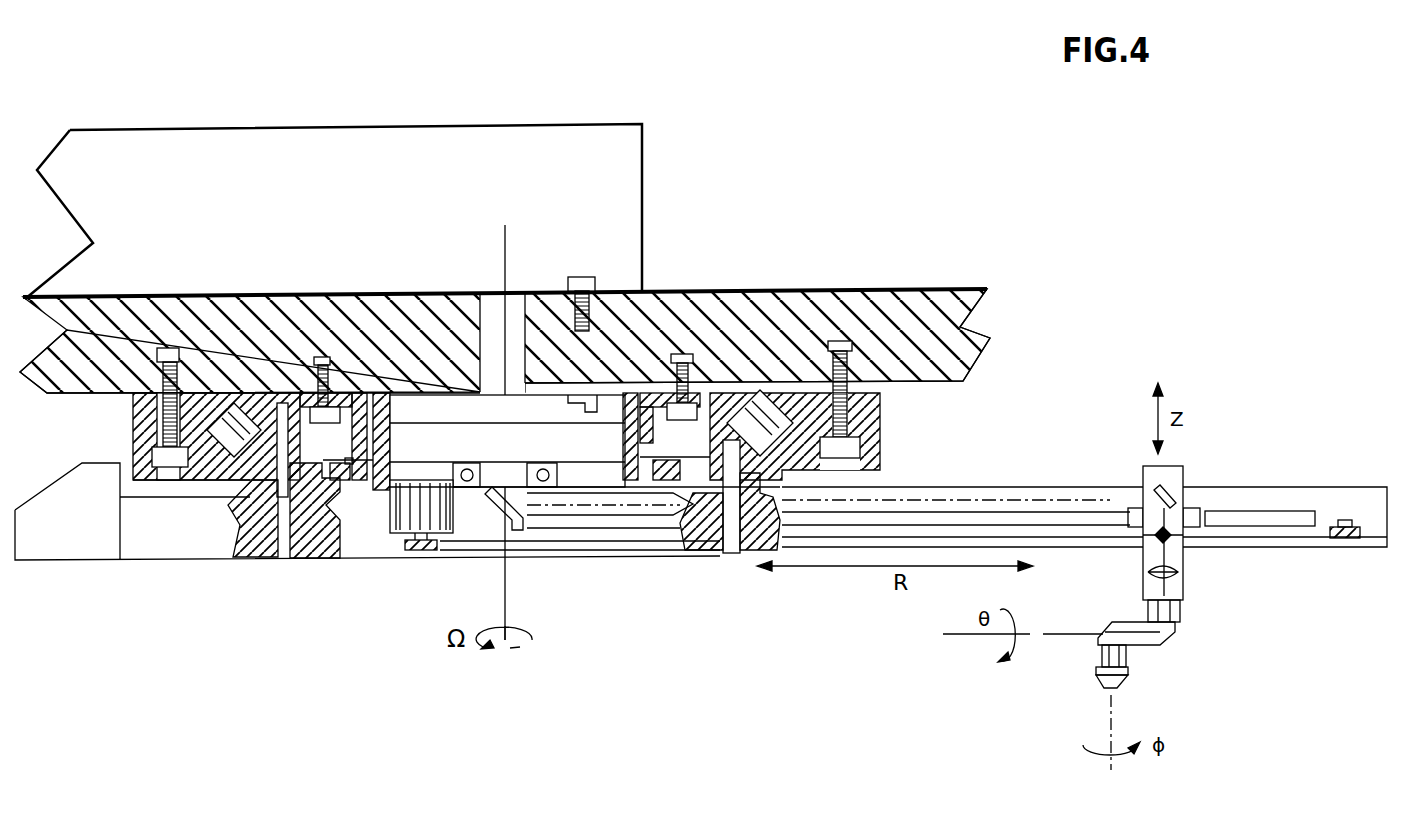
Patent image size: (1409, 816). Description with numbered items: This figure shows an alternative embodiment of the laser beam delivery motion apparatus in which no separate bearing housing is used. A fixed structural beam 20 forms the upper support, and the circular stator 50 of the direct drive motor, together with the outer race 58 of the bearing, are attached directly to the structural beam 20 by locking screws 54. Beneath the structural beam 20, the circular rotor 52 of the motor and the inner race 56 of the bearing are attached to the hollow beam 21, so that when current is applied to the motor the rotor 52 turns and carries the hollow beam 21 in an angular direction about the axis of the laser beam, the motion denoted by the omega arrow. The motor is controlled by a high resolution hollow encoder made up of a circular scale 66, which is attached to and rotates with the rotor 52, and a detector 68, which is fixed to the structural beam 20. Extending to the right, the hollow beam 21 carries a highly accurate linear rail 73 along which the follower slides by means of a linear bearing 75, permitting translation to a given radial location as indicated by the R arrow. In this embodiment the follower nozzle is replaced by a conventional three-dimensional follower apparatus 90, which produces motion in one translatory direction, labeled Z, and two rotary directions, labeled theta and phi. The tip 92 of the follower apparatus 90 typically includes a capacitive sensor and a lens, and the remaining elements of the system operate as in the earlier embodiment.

The structural beam 20 is at (890, 313).
The hollow beam 21 is at (943, 493).
The stator 50 is at (649, 383).
The rotor 52 is at (615, 468).
The locking screws 54 is at (355, 400).
The inner race 56 is at (748, 395).
The outer race 58 is at (873, 443).
The circular scale 66 is at (605, 422).
The detector 68 is at (572, 392).
The linear rail 73 is at (1047, 520).
The linear bearing 75 is at (1123, 513).
The three-dimensional follower apparatus 90 is at (1220, 600).
The tip 92 is at (1127, 678).